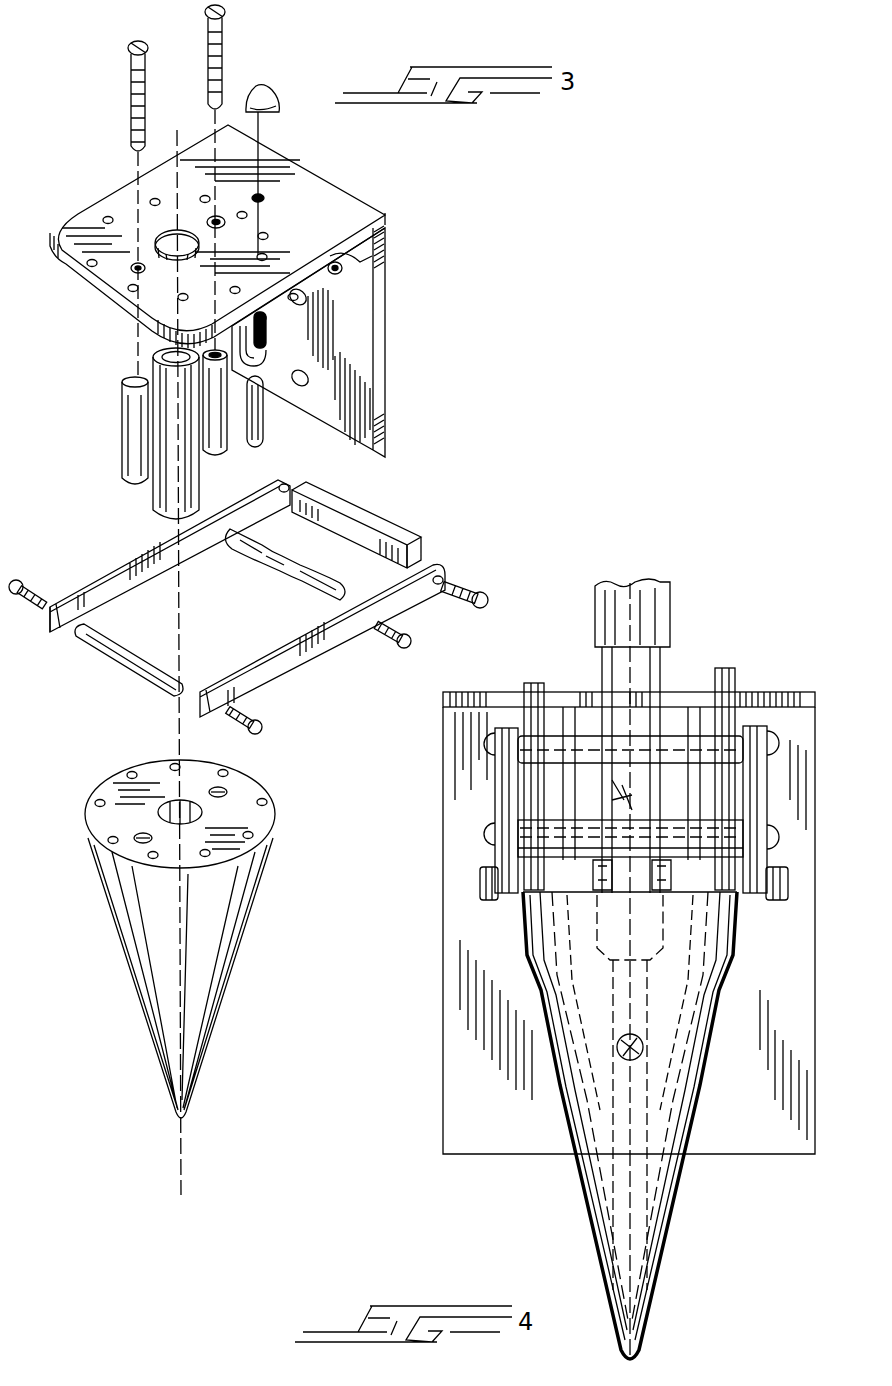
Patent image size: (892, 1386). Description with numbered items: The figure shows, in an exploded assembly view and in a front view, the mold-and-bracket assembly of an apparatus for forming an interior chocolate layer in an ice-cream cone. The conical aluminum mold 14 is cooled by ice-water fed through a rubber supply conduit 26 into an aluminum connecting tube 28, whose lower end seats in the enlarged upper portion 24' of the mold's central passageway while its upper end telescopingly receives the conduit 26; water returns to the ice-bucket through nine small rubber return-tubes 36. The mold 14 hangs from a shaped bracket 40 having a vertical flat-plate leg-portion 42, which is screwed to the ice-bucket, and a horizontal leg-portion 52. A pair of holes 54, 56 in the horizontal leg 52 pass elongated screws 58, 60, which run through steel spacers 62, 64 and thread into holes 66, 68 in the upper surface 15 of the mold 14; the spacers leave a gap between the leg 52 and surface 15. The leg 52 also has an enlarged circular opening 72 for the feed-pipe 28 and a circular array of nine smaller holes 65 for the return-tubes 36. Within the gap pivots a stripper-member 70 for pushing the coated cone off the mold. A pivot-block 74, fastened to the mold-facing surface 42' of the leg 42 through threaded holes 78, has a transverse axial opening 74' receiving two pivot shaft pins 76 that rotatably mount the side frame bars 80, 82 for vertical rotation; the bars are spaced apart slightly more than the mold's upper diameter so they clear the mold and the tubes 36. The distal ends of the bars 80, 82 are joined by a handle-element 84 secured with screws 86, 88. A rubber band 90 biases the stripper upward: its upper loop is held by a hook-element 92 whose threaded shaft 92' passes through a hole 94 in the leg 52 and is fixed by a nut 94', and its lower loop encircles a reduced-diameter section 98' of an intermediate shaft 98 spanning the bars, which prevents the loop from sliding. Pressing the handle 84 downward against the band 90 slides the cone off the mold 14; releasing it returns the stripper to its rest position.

In FIG. 4, the mold 14 is at (680, 1226).
In FIG. 3, the upper surface of the mold 15 is at (180, 939).
In FIG. 3, the enlarged upper portion of the central passageway 24' is at (237, 807).
In FIG. 4, the supply conduit 26 is at (672, 625).
In FIG. 3, the connecting tube 28 is at (162, 518).
In FIG. 4, the connecting tube 28 is at (650, 680).
In FIG. 4, the return-tubes 36 is at (530, 683).
In FIG. 3, the bracket 40 is at (400, 198).
In FIG. 3, the first vertical leg-portion 42 is at (333, 341).
In FIG. 4, the first vertical leg-portion 42 is at (629, 930).
In FIG. 3, the mold-facing surface of the first leg-portion 42' is at (352, 305).
In FIG. 3, the second horizontal leg-portion 52 is at (336, 225).
In FIG. 4, the second horizontal leg-portion 52 is at (568, 694).
In FIG. 3, the hole 54 is at (100, 282).
In FIG. 3, the hole 56 is at (222, 218).
In FIG. 3, the elongated screw 58 is at (133, 100).
In FIG. 3, the elongated screw 60 is at (224, 46).
In FIG. 3, the steel spacer 62 is at (128, 430).
In FIG. 3, the steel spacer 64 is at (222, 440).
In FIG. 3, the smaller circular holes 65 is at (96, 800).
In FIG. 3, the threaded hole 66 is at (134, 836).
In FIG. 3, the threaded hole 68 is at (220, 789).
In FIG. 3, the stripper-member 70 is at (105, 570).
In FIG. 3, the enlarged circular opening 72 is at (160, 235).
In FIG. 3, the pivot-block 74 is at (356, 525).
In FIG. 3, the transverse axial opening 74' is at (429, 545).
In FIG. 3, the pivot shaft pins 76 is at (462, 582).
In FIG. 4, the pivot shaft pins 76 is at (488, 882).
In FIG. 3, the threaded holes 78 is at (342, 266).
In FIG. 3, the side frame bar 80 is at (170, 572).
In FIG. 4, the side frame bar 80 is at (505, 776).
In FIG. 3, the side frame bar 82 is at (348, 627).
In FIG. 4, the side frame bar 82 is at (757, 813).
In FIG. 3, the handle-element 84 is at (125, 660).
In FIG. 4, the handle-element 84 is at (690, 748).
In FIG. 3, the screw 86 is at (22, 598).
In FIG. 3, the screw 88 is at (248, 716).
In FIG. 3, the rubber band 90 is at (262, 410).
In FIG. 3, the hook-element 92 is at (272, 339).
In FIG. 3, the threaded shaft 92' is at (363, 288).
In FIG. 3, the hole 94 is at (306, 201).
In FIG. 3, the nut 94' is at (283, 83).
In FIG. 3, the intermediate shaft 98 is at (285, 577).
In FIG. 3, the reduced-diameter section 98' is at (255, 575).